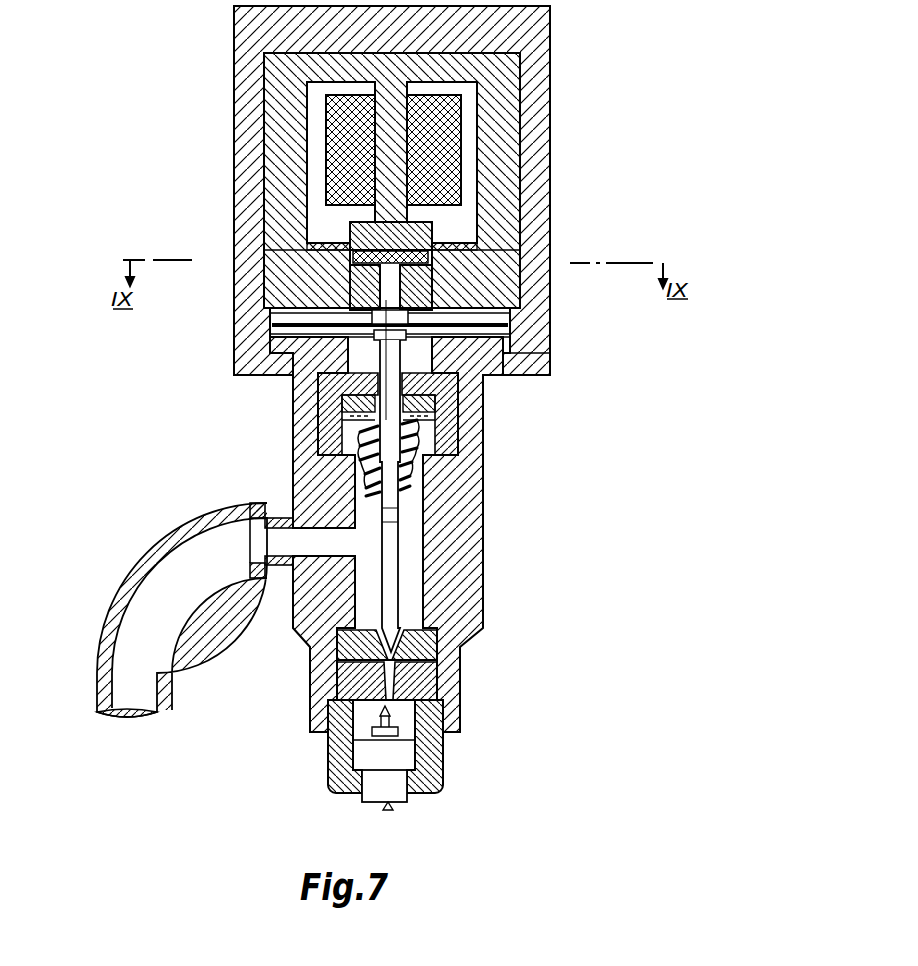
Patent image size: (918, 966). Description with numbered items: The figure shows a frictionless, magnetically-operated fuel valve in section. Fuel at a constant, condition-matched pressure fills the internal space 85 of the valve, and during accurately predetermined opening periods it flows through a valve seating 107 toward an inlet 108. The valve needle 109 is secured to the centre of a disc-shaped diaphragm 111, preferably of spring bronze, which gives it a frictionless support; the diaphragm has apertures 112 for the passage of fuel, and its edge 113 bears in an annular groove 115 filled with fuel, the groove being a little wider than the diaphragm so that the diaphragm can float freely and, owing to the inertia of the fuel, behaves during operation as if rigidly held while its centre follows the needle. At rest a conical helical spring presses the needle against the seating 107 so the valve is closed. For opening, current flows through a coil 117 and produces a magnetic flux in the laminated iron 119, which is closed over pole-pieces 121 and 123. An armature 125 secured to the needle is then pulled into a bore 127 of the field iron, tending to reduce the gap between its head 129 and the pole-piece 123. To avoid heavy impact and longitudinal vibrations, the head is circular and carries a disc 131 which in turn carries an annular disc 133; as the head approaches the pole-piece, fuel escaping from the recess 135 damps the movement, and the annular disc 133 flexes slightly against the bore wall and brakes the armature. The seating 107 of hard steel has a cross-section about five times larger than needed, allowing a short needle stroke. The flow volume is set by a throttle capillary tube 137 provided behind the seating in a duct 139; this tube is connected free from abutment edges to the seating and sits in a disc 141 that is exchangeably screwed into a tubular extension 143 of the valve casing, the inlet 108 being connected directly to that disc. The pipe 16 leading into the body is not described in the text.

The inlet pipe 16 is at (143, 600).
The internal space 85 is at (413, 607).
The valve seating 107 is at (400, 665).
The inlet 108 is at (443, 753).
The valve needle 109 is at (400, 573).
The disc-shaped diaphragm 111 is at (416, 338).
The apertures 112 is at (540, 364).
The edge of the diaphragm 113 is at (507, 327).
The annular groove 115 is at (503, 330).
The coil 117 is at (443, 112).
The laminated iron 119 is at (293, 122).
The pole-piece 121 is at (347, 281).
The pole-piece 123 is at (433, 233).
The armature 125 is at (422, 287).
The bore 127 is at (460, 258).
The head of the armature 129 is at (353, 262).
The disc 131 is at (358, 276).
The annular disc 133 is at (350, 224).
The recess 135 is at (386, 250).
The throttle capillary tube 137 is at (400, 695).
The duct 139 is at (355, 690).
The disc 141 is at (360, 680).
The tubular extension 143 is at (343, 727).